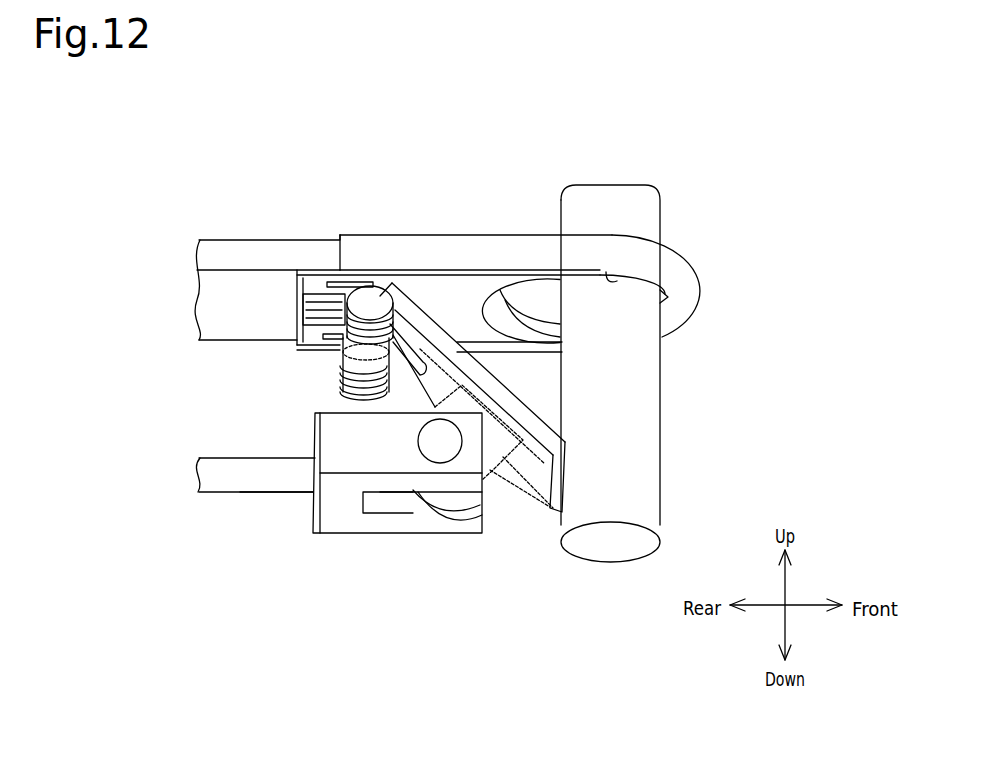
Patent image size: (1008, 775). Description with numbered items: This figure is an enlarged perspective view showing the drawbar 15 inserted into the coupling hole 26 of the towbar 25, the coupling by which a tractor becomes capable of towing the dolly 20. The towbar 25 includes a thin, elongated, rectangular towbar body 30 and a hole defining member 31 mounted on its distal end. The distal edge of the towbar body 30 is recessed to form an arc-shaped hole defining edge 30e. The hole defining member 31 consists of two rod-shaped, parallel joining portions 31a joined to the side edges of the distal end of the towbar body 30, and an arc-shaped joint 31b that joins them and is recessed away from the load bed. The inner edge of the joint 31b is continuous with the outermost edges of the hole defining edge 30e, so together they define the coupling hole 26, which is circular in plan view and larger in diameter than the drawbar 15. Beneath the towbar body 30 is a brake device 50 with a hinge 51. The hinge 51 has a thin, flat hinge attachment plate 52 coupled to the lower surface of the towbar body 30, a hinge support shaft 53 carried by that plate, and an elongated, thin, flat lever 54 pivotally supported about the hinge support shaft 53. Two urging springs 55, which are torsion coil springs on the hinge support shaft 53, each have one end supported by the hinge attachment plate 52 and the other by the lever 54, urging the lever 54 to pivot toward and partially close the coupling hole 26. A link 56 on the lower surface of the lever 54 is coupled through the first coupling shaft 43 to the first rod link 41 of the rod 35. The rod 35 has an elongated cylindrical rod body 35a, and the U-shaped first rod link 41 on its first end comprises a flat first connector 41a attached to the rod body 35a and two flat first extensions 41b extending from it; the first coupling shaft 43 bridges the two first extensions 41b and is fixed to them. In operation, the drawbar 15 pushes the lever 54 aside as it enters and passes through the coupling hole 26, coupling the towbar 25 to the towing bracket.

The drawbar 15 is at (649, 190).
The dolly 20 is at (553, 148).
The towbar 25 is at (222, 240).
The coupling hole 26 is at (616, 276).
The towbar body 30 is at (265, 240).
The hole defining edge 30e is at (527, 283).
The hole defining member 31 is at (688, 322).
The joining portions 31a is at (421, 242).
The joint 31b is at (690, 294).
The rod 35 is at (222, 458).
The rod body 35a is at (233, 482).
The first rod link 41 is at (310, 524).
The first connector 41a is at (340, 505).
The first extensions 41b is at (427, 487).
The first coupling shaft 43 is at (425, 442).
The brake device 50 is at (479, 557).
The hinge 51 is at (318, 272).
The hinge attachment plate 52 is at (305, 343).
The hinge support shaft 53 is at (373, 302).
The lever 54 is at (418, 296).
The urging springs 55 is at (343, 317).
The link 56 is at (494, 452).